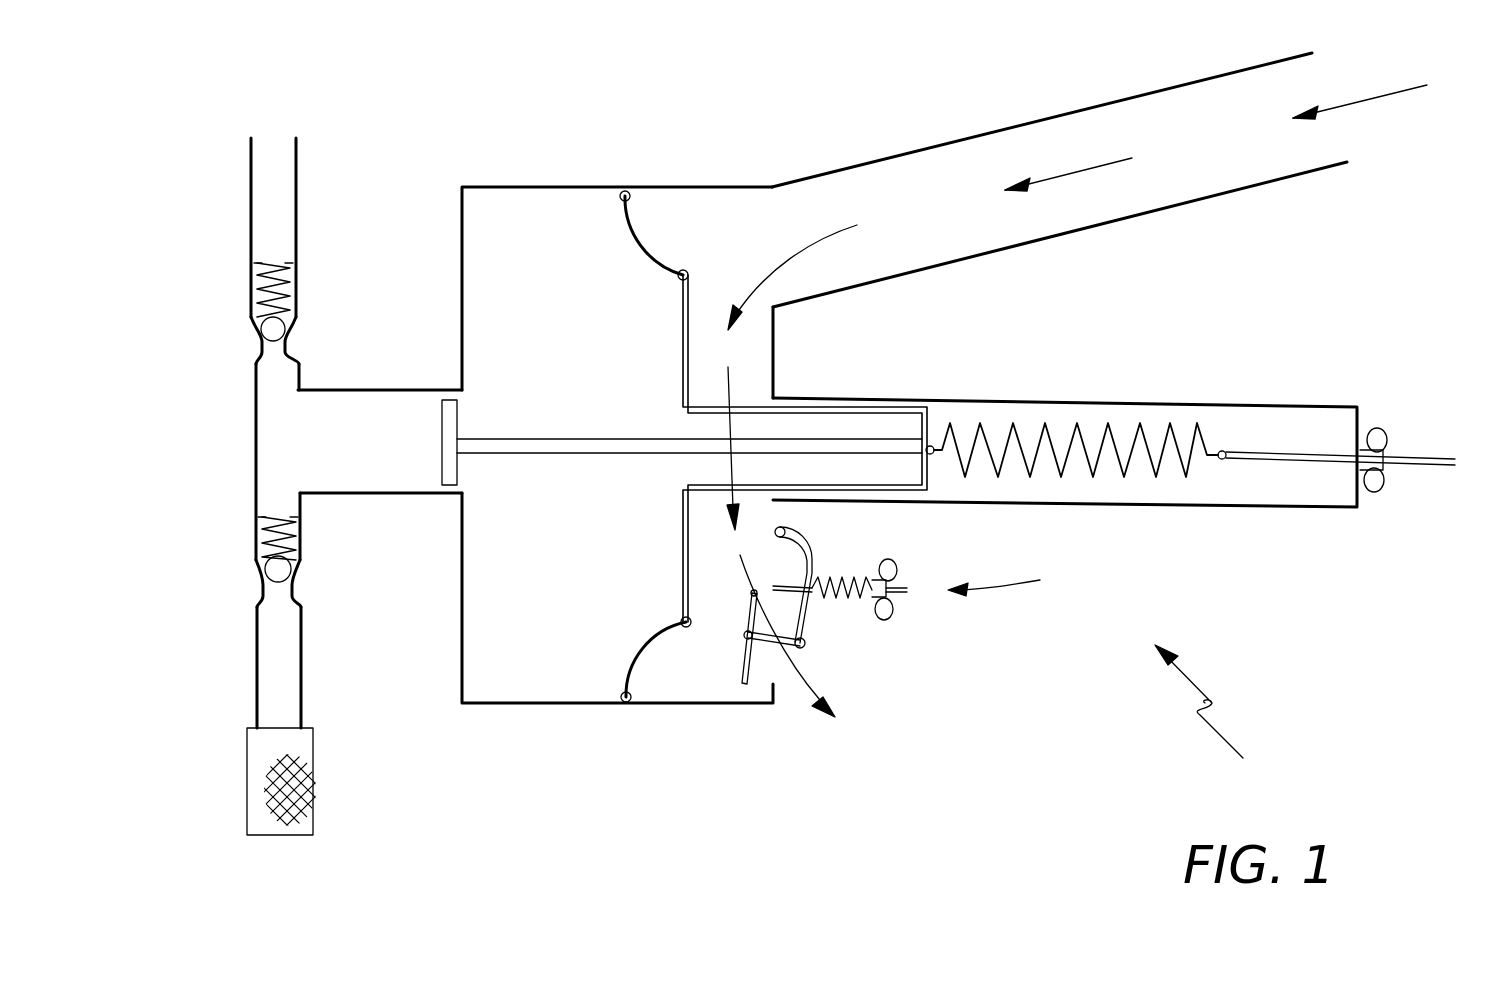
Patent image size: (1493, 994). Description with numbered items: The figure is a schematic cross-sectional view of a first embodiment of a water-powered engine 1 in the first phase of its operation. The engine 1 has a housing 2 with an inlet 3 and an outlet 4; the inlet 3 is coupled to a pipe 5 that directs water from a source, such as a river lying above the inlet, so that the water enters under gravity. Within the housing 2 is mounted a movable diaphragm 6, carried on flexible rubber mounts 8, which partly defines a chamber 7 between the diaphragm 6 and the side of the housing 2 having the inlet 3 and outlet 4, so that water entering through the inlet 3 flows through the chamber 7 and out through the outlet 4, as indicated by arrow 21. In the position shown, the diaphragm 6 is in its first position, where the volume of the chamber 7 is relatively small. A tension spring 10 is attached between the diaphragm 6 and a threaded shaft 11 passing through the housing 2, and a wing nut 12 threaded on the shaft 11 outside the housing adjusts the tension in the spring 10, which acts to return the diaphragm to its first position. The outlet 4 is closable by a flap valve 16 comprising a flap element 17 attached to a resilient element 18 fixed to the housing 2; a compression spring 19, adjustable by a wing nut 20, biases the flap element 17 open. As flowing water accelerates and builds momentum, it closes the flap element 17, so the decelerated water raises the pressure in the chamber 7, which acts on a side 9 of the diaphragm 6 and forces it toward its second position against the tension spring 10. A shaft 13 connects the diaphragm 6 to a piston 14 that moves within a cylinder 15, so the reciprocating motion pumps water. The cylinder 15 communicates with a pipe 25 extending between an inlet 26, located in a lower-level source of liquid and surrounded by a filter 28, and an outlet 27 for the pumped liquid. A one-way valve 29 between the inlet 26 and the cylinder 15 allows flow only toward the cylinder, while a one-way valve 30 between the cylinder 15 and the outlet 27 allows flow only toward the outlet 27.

The engine 1 is at (1209, 717).
The housing 2 is at (535, 186).
The inlet 3 is at (1177, 132).
The outlet 4 is at (773, 667).
The pipe 5 is at (1025, 122).
The diaphragm 6 is at (682, 330).
The chamber 7 is at (745, 344).
The flexible rubber mounts 8 is at (642, 657).
The side of the diaphragm 9 is at (693, 291).
The tension spring 10 is at (1113, 432).
The threaded shaft 11 is at (1297, 457).
The wing nut 12 is at (1380, 438).
The shaft 13 is at (550, 442).
The piston 14 is at (443, 465).
The cylinder 15 is at (350, 413).
The flap valve 16 is at (1018, 573).
The flap element 17 is at (745, 672).
The resilient element 18 is at (807, 623).
The compression spring 19 is at (836, 580).
The wing nut 20 is at (897, 568).
The arrow 21 is at (810, 240).
The pipe 25 is at (268, 442).
The inlet 26 is at (272, 706).
The outlet 27 is at (276, 153).
The filter 28 is at (313, 800).
The one-way valve 29 is at (258, 556).
The one-way valve 30 is at (250, 293).